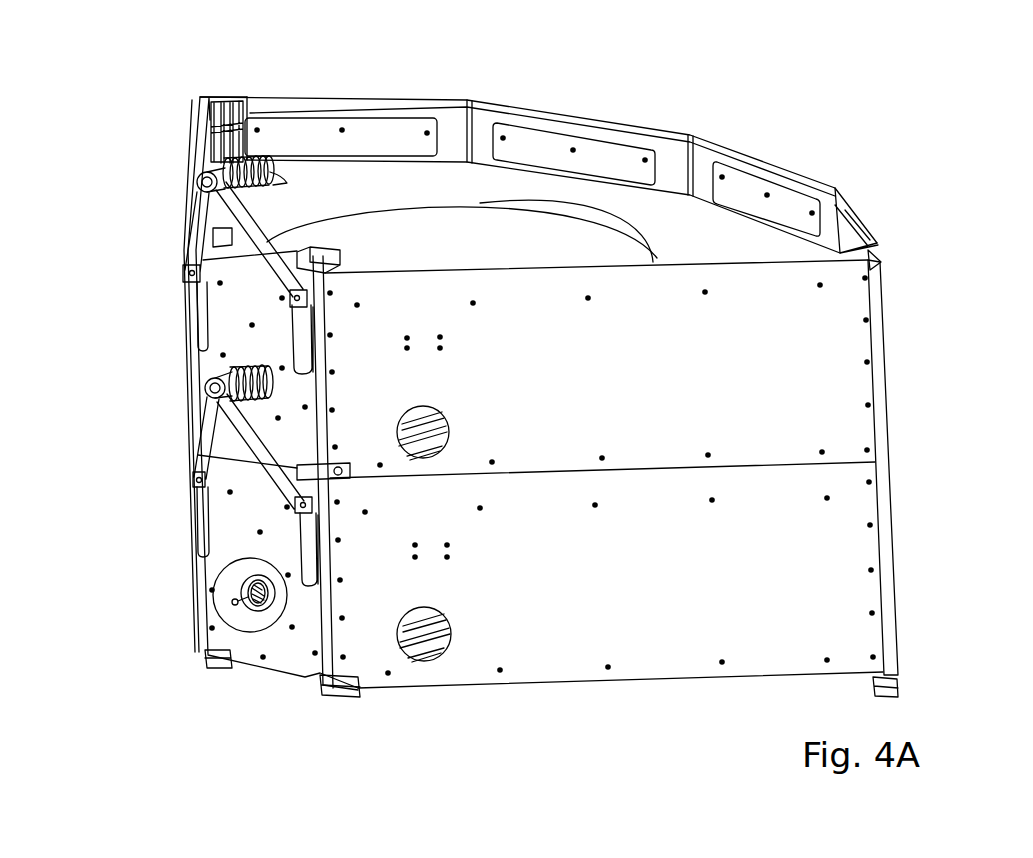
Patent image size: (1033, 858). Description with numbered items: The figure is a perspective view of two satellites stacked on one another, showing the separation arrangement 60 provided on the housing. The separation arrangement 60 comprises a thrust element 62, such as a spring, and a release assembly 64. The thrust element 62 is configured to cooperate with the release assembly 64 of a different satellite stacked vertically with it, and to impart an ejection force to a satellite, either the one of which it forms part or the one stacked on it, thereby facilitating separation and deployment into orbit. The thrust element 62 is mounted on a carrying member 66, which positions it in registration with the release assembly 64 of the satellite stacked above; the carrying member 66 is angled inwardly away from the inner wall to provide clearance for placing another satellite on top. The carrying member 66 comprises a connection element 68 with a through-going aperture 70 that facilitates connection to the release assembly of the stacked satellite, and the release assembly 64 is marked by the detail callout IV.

The separation arrangement 60 is at (150, 162).
The thrust element 62 is at (250, 162).
The release assembly 64 is at (249, 620).
The carrying member 66 is at (190, 262).
The connection element 68 is at (213, 97).
The through-going aperture 70 is at (197, 188).
The detail view callout IV is at (267, 630).